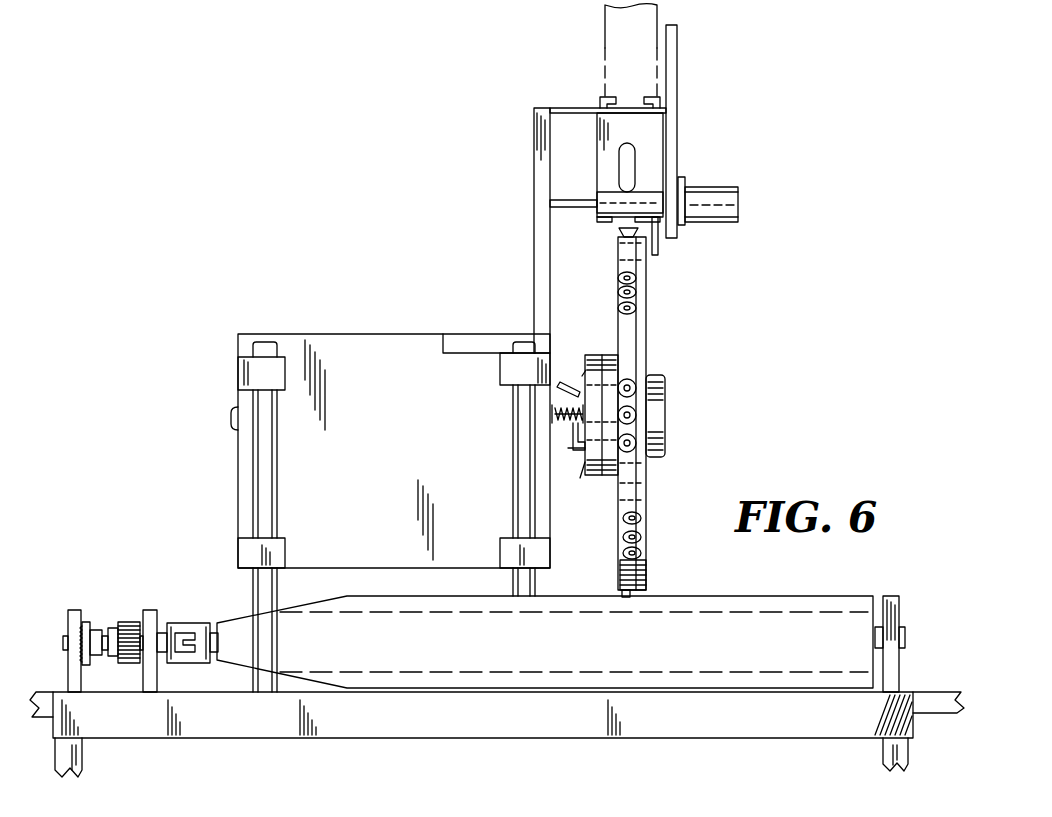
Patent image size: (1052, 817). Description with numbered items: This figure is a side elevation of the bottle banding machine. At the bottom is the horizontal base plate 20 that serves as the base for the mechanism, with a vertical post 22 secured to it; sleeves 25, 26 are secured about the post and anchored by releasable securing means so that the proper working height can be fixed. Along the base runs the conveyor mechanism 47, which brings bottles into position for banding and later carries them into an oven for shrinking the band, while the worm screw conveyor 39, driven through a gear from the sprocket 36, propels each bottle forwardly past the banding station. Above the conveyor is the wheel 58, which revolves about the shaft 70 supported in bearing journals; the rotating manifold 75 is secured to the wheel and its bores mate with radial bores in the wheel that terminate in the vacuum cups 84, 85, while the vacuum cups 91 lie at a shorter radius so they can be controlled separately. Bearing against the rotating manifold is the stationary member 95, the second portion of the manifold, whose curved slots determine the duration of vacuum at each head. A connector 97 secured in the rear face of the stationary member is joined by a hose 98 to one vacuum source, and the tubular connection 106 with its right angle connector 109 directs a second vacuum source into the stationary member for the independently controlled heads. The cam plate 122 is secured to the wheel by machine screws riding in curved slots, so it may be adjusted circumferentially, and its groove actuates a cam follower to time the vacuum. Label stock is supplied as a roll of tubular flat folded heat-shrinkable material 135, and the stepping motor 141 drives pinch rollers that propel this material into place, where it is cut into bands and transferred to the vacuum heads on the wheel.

The base plate 20 is at (418, 690).
The post 22 is at (257, 467).
The sleeve 25 is at (500, 370).
The sleeve 26 is at (502, 550).
The sprocket 36 is at (122, 624).
The worm screw conveyor 39 is at (718, 596).
The conveyor mechanism 47 is at (43, 692).
The wheel 58 is at (618, 258).
The shaft 70 is at (572, 438).
The manifold 75 is at (606, 478).
The vacuum cups 84 is at (637, 306).
The vacuum cups 85 is at (642, 542).
The vacuum cups 91 is at (637, 416).
The stationary member 95 is at (588, 475).
The connector 97 is at (583, 378).
The hose 98 is at (580, 376).
The tubular connection 106 is at (552, 397).
The right angle connector 109 is at (568, 448).
The cam plate 122 is at (648, 338).
The tubular flat folded heat-shrinkable material 135 is at (605, 29).
The stepping motor 141 is at (735, 184).